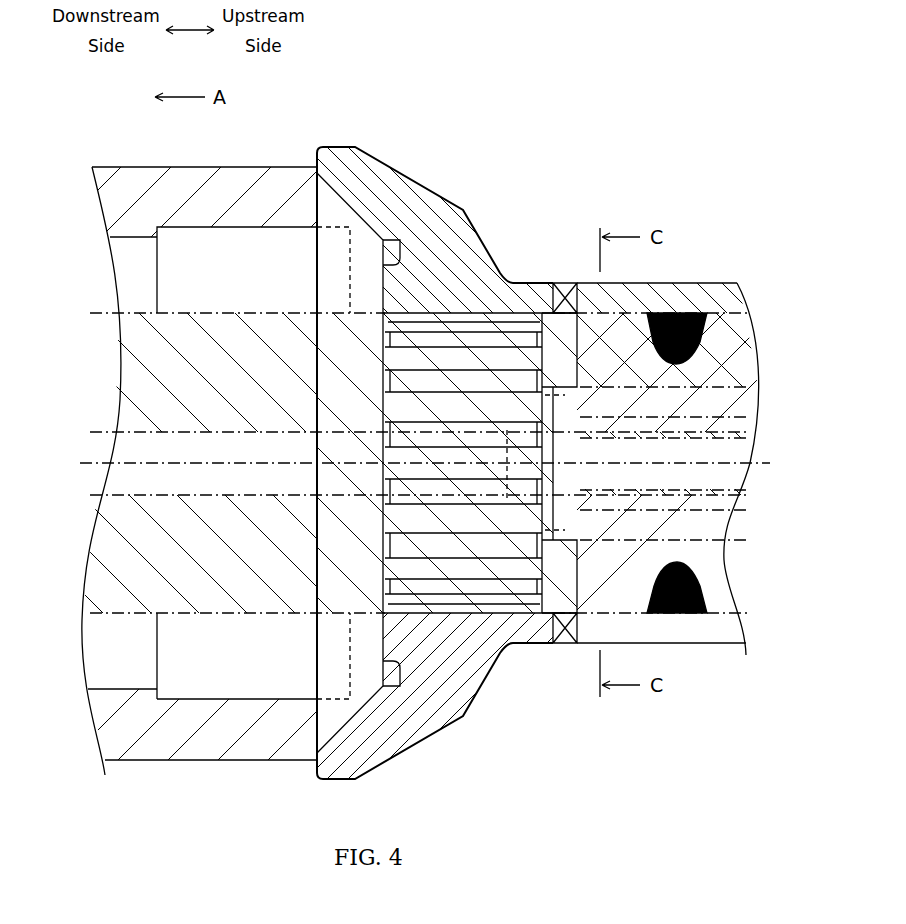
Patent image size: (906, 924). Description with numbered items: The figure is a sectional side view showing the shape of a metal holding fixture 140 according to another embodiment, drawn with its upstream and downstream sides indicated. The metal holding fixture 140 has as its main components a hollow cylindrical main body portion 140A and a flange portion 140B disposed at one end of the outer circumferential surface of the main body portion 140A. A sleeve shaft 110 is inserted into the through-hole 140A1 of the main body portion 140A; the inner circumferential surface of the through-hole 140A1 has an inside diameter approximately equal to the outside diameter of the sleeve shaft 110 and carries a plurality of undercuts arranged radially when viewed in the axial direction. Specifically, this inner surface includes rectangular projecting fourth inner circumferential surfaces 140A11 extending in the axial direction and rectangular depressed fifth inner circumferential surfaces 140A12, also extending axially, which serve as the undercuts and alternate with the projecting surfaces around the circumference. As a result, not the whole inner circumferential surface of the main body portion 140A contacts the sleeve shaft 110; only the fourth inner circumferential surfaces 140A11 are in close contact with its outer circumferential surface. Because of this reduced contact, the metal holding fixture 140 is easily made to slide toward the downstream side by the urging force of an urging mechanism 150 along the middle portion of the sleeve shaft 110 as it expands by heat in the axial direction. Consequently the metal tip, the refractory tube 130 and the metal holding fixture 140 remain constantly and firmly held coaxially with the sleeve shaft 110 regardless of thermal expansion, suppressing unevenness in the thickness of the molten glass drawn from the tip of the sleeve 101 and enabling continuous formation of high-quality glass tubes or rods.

The sleeve 101 is at (672, 127).
The sleeve shaft 110 is at (160, 313).
The refractory tube 130 is at (233, 167).
The metal holding fixture 140 is at (563, 153).
The main body portion 140A is at (528, 283).
The flange portion 140B is at (450, 201).
The through-hole 140A1 is at (600, 712).
The fourth inner circumferential surface 140A11 is at (470, 488).
The fifth inner circumferential surface 140A12 is at (425, 473).
The urging mechanism 150 is at (688, 283).